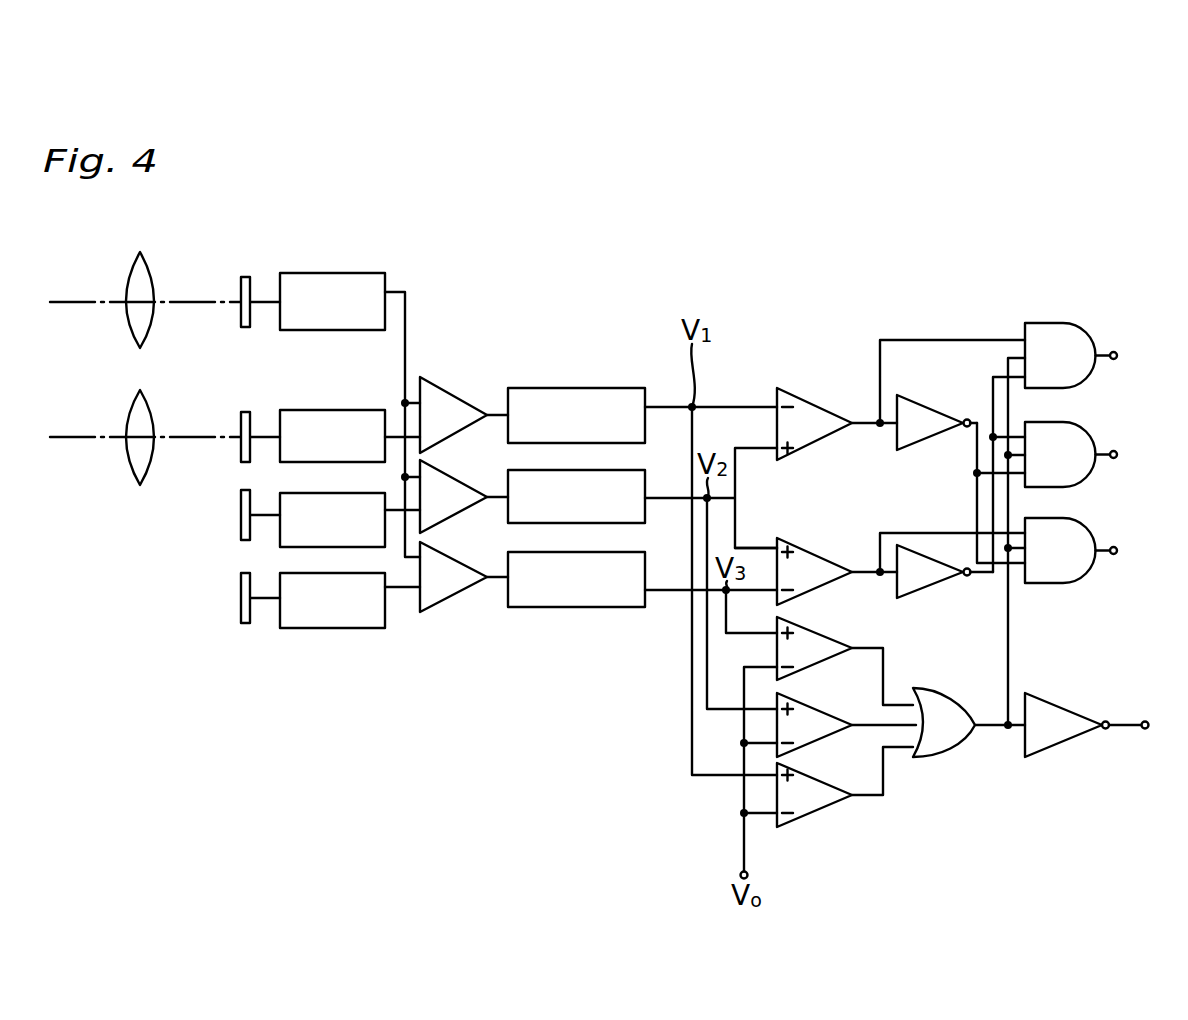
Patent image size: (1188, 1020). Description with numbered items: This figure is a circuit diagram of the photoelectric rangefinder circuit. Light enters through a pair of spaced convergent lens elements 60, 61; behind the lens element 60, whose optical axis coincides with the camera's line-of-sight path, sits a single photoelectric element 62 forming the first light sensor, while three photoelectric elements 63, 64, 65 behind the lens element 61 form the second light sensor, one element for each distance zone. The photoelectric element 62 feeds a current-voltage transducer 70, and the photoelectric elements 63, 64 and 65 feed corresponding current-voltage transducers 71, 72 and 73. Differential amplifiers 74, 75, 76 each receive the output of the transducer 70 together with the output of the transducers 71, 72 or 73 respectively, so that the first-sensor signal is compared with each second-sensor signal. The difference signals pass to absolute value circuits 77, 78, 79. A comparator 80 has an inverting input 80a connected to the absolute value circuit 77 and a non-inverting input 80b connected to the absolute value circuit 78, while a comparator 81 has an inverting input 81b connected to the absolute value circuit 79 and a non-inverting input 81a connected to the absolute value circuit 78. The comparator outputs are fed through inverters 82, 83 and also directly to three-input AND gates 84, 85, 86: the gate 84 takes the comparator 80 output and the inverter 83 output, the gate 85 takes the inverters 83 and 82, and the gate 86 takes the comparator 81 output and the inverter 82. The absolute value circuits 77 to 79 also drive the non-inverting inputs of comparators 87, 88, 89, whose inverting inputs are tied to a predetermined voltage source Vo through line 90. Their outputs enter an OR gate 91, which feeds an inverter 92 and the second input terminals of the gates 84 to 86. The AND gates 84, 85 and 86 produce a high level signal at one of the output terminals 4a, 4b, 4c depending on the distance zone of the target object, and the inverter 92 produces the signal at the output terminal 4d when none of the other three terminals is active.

The convergent lens element 60 is at (140, 252).
The convergent lens element 61 is at (140, 485).
The photoelectric element 62 is at (241, 280).
The photoelectric element 63 is at (241, 418).
The photoelectric element 64 is at (241, 510).
The photoelectric element 65 is at (241, 598).
The current-voltage transducer 70 is at (378, 273).
The current-voltage transducer 71 is at (368, 414).
The current-voltage transducer 72 is at (366, 502).
The current-voltage transducer 73 is at (370, 628).
The differential amplifier 74 is at (455, 397).
The differential amplifier 75 is at (462, 483).
The differential amplifier 76 is at (458, 562).
The absolute value circuit 77 is at (620, 388).
The absolute value circuit 78 is at (612, 470).
The absolute value circuit 79 is at (612, 552).
The comparator 80 is at (828, 411).
The inverting input 80a is at (766, 400).
The non-inverting input 80b is at (742, 477).
The comparator 81 is at (830, 562).
The non-inverting input 81a is at (757, 548).
The inverting input 81b is at (742, 592).
The inverter 82 is at (925, 407).
The inverter 83 is at (925, 587).
The AND gate 84 is at (1080, 328).
The AND gate 85 is at (1080, 427).
The AND gate 86 is at (1080, 523).
The comparator 87 is at (830, 639).
The comparator 88 is at (830, 716).
The comparator 89 is at (830, 786).
The line 90 is at (744, 848).
The OR gate 91 is at (950, 749).
The inverter 92 is at (1068, 711).
The output terminal 4a is at (1117, 356).
The output terminal 4b is at (1117, 454).
The output terminal 4c is at (1117, 550).
The output terminal 4d is at (1146, 721).